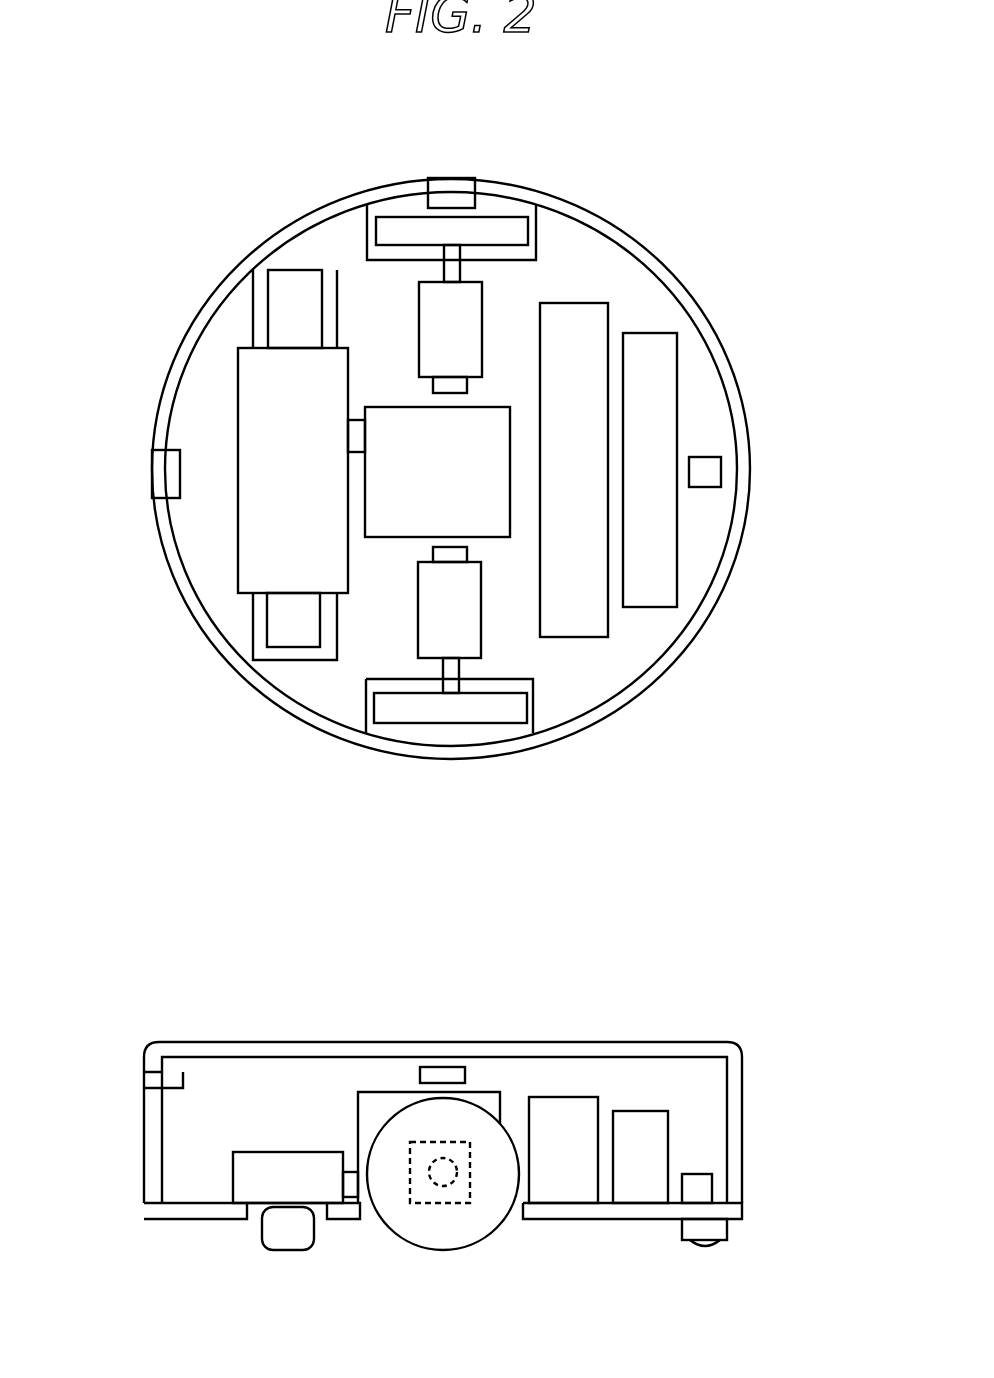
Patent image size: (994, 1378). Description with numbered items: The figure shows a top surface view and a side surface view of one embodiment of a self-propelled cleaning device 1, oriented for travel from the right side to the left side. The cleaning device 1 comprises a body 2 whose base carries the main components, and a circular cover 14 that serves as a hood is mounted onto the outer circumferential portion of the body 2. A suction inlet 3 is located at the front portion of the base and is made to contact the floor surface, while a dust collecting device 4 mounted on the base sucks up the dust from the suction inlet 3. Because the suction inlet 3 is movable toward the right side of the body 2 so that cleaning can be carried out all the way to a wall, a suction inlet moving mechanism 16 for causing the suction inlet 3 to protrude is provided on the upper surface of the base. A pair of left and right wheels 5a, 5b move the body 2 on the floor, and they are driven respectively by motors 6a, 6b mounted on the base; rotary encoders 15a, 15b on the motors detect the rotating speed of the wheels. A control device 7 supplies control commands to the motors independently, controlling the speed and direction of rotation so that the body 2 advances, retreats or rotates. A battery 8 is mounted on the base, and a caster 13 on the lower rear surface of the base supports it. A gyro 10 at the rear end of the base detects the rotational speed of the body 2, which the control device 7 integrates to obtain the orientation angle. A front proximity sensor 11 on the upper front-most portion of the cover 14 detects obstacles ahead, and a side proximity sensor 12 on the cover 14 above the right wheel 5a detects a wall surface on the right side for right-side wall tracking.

The self-propelled cleaning device 1 is at (753, 226).
The body 2 is at (307, 682).
The suction inlet 3 is at (268, 315).
The dust collecting device 4 is at (388, 407).
The right wheel 5a is at (405, 217).
The left wheel 5b is at (407, 723).
The motor 6a is at (482, 298).
The motor 6b is at (465, 553).
The control device 7 is at (677, 535).
The battery 8 is at (607, 627).
The gyro 10 is at (722, 470).
The front proximity sensor 11 is at (152, 462).
The side proximity sensor 12 is at (450, 178).
The caster 13 is at (710, 1245).
The circular cover 14 is at (178, 592).
The rotary encoder 15a is at (467, 387).
The rotary encoder 15b is at (482, 643).
The suction inlet moving mechanism 16 is at (238, 430).